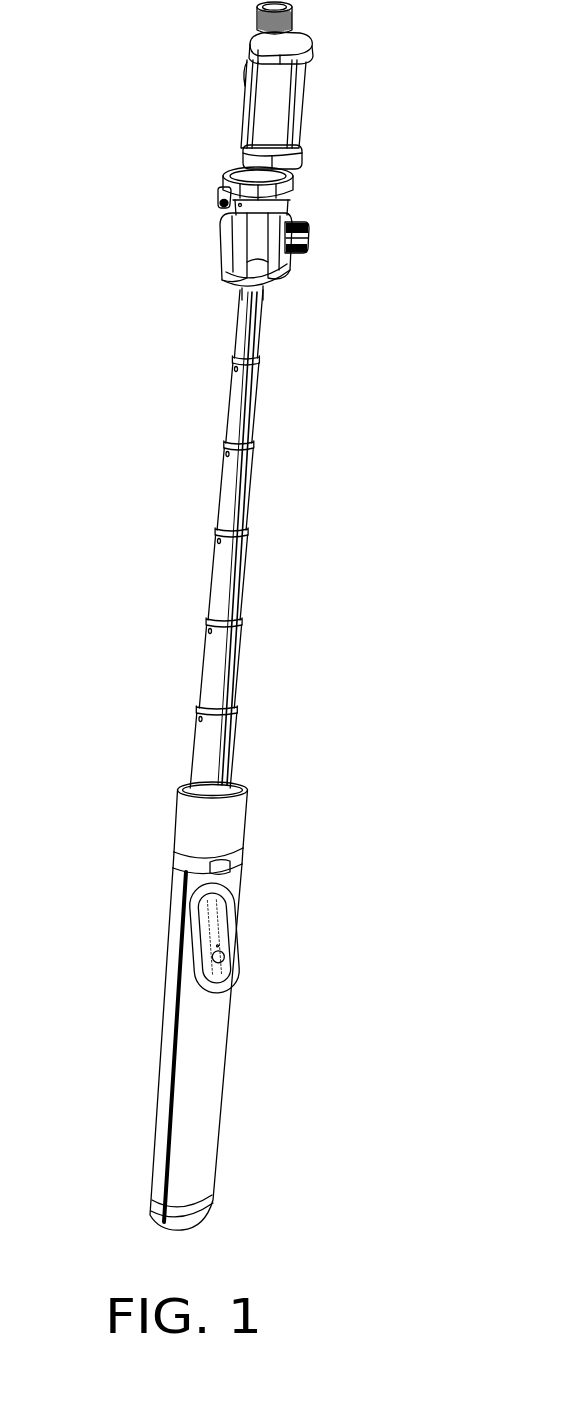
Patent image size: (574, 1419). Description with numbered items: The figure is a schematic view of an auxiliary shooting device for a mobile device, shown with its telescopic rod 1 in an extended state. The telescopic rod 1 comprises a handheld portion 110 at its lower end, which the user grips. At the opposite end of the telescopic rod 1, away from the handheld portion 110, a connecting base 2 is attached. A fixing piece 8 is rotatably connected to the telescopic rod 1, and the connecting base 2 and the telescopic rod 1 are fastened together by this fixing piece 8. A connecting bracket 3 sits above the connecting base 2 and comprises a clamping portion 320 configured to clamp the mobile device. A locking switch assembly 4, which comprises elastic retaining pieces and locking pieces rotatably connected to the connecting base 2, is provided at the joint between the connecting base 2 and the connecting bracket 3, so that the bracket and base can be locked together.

The clamping portion 320 is at (268, 102).
The connecting bracket 3 is at (250, 185).
The locking switch assembly 4 is at (219, 193).
The connecting base 2 is at (263, 212).
The fixing piece 8 is at (302, 240).
The telescopic rod 1 is at (225, 665).
The handheld portion 110 is at (190, 1078).